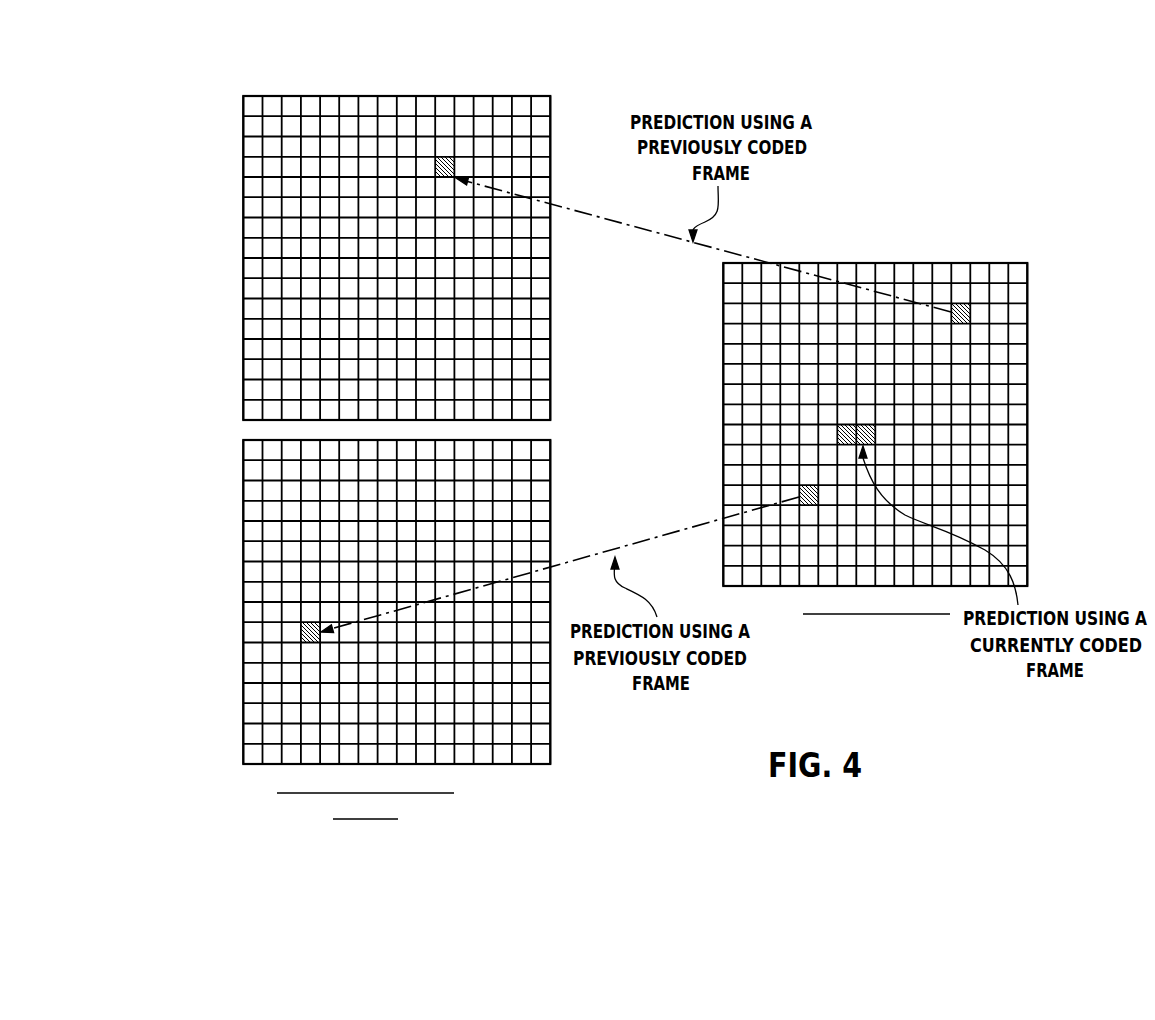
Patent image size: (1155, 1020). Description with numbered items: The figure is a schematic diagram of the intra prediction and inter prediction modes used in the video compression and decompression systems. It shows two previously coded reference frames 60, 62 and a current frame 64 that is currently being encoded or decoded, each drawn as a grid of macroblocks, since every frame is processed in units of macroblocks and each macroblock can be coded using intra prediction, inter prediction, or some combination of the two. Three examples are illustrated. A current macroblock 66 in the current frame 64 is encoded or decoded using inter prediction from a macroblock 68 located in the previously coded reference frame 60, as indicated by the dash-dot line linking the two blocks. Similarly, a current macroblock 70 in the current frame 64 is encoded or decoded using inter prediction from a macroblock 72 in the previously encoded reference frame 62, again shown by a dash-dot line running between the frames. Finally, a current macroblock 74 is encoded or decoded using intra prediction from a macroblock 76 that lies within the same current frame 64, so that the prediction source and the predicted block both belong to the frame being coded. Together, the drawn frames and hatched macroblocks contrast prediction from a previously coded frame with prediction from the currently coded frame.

The reference frame 60 is at (228, 127).
The reference frame 62 is at (228, 472).
The current frame 64 is at (1035, 571).
The current macroblock 66 is at (971, 312).
The macroblock 68 is at (438, 157).
The current macroblock 70 is at (810, 506).
The macroblock 72 is at (302, 632).
The current macroblock 74 is at (876, 432).
The macroblock 76 is at (843, 424).